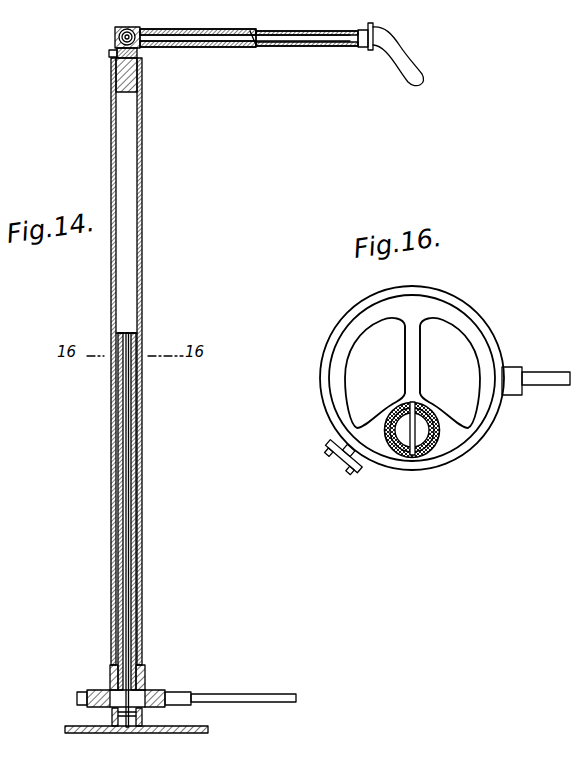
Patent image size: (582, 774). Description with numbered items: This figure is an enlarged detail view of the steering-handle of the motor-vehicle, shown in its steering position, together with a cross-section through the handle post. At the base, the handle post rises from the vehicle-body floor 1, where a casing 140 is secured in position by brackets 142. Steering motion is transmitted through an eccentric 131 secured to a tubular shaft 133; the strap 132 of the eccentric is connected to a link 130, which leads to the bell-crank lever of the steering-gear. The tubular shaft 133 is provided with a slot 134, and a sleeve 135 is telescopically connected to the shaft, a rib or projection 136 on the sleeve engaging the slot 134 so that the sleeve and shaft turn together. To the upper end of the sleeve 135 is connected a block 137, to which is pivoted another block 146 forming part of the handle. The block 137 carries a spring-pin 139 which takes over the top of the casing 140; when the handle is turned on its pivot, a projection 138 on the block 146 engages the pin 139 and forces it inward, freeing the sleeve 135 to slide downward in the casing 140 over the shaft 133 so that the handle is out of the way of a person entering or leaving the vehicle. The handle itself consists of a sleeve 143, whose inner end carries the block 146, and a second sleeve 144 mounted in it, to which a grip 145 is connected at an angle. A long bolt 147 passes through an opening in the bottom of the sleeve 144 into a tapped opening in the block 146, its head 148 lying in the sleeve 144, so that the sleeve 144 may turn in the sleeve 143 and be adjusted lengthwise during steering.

In FIG. 14, the base plate 1 is at (112, 733).
In FIG. 14, the link 130 is at (275, 699).
In FIG. 16, the link 130 is at (560, 378).
In FIG. 14, the eccentric 131 is at (85, 705).
In FIG. 16, the eccentric 131 is at (455, 303).
In FIG. 14, the strap 132 is at (103, 690).
In FIG. 16, the strap 132 is at (345, 340).
In FIG. 14, the tubular shaft 133 is at (119, 640).
In FIG. 16, the tubular shaft 133 is at (426, 462).
In FIG. 14, the slot 134 is at (129, 530).
In FIG. 16, the slot 134 is at (416, 412).
In FIG. 14, the sleeve 135 is at (119, 318).
In FIG. 16, the sleeve 135 is at (392, 420).
In FIG. 14, the rib or projection 136 is at (136, 370).
In FIG. 16, the rib or projection 136 is at (352, 448).
In FIG. 14, the block 137 is at (135, 84).
In FIG. 14, the projection 138 is at (119, 37).
In FIG. 14, the spring-pin 139 is at (109, 55).
In FIG. 14, the casing 140 is at (111, 128).
In FIG. 16, the casing 140 is at (428, 412).
In FIG. 14, the bracket 142 is at (145, 678).
In FIG. 14, the sleeve 143 is at (199, 45).
In FIG. 14, the second sleeve 144 is at (307, 47).
In FIG. 14, the grip 145 is at (414, 78).
In FIG. 14, the block 146 is at (124, 27).
In FIG. 14, the bolt 147 is at (190, 35).
In FIG. 14, the head 148 is at (256, 35).